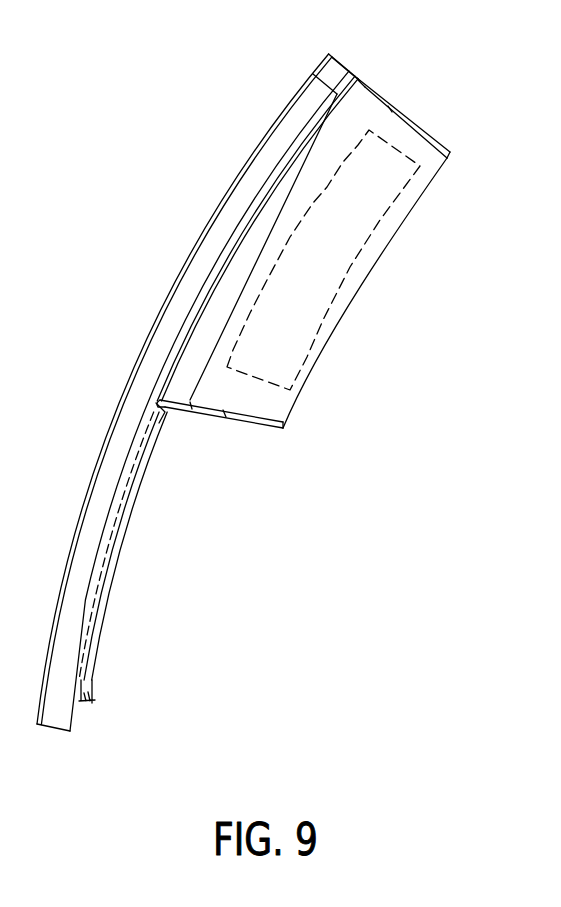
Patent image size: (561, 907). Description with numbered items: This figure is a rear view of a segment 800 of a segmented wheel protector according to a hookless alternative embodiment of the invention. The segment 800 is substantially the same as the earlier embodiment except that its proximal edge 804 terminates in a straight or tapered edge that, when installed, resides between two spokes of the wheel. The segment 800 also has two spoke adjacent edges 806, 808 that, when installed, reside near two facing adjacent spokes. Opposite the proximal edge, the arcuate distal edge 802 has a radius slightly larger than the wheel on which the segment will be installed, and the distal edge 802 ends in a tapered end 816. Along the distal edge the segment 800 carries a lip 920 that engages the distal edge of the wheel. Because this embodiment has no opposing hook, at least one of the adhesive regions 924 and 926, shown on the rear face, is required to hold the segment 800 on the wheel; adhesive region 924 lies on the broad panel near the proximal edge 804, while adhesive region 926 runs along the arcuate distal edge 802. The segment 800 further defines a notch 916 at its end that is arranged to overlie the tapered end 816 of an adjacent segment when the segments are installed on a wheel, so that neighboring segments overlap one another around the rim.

The segment 800 is at (263, 609).
The arcuate distal edge 802 is at (143, 345).
The proximal edge 804 is at (333, 332).
The spoke adjacent edge 806 is at (427, 130).
The spoke adjacent edge 808 is at (250, 428).
The tapered end 816 is at (58, 725).
The notch 916 is at (342, 65).
The lip 920 is at (300, 146).
The adhesive region 924 is at (353, 240).
The adhesive region 926 is at (133, 481).